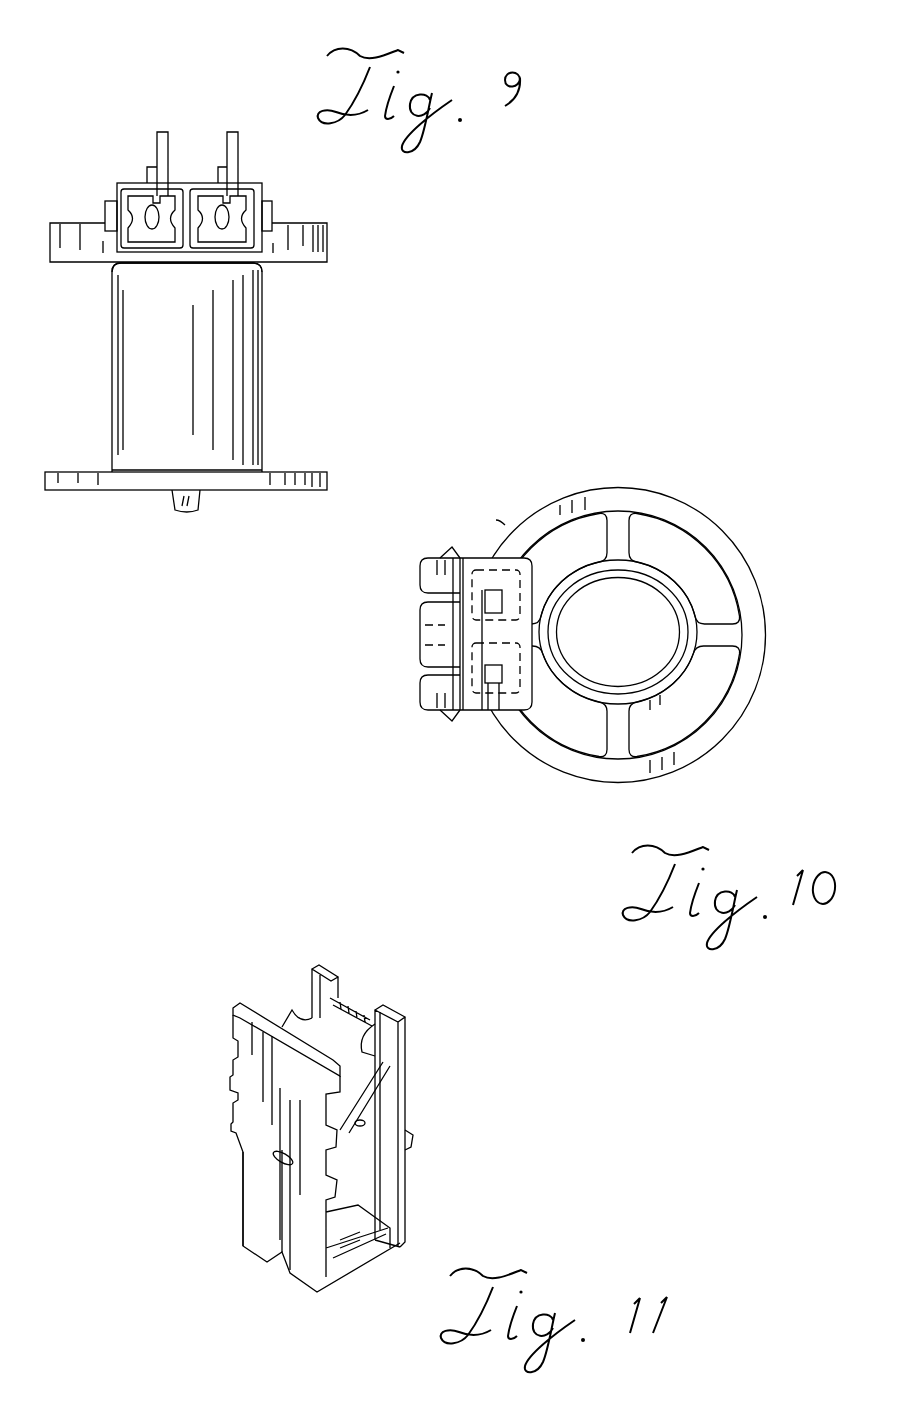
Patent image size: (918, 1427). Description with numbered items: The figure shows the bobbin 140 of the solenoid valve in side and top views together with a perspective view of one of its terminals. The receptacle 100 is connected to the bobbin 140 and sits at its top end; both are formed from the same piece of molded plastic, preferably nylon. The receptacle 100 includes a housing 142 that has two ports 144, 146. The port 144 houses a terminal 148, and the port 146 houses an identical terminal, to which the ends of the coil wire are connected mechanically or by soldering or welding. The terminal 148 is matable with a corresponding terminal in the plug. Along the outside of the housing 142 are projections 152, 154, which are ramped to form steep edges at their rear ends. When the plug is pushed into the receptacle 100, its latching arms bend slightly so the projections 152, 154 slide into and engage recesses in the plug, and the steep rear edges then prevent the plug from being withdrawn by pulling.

In FIG. 9, the receptacle 100 is at (197, 182).
In FIG. 10, the receptacle 100 is at (486, 711).
In FIG. 9, the bobbin 140 is at (262, 415).
In FIG. 10, the bobbin 140 is at (738, 527).
In FIG. 10, the housing 142 is at (493, 558).
In FIG. 9, the port 144 is at (240, 220).
In FIG. 9, the port 146 is at (140, 200).
In FIG. 11, the terminal 148 is at (211, 1028).
In FIG. 9, the projection 152 is at (262, 265).
In FIG. 9, the projection 154 is at (108, 210).